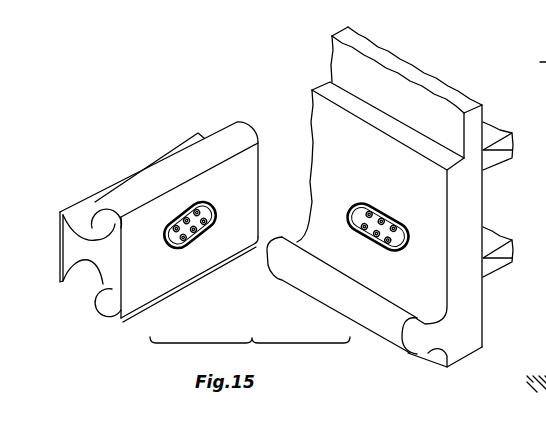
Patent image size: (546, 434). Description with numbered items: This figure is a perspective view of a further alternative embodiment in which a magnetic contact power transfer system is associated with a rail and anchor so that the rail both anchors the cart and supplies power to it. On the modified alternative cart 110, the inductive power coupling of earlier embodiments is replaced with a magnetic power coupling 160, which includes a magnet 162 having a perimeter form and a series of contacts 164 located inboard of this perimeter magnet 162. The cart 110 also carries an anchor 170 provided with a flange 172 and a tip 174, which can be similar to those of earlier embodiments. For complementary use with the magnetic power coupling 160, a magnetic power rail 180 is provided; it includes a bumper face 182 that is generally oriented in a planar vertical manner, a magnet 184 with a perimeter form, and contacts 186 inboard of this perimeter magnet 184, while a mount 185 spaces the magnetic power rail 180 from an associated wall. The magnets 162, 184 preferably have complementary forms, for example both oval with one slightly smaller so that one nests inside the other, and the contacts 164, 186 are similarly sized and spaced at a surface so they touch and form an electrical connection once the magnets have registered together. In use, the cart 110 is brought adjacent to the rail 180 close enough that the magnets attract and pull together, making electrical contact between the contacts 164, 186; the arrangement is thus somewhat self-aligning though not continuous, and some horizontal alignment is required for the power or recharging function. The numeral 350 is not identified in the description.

The alternative cart 110 is at (392, 212).
The magnetic power coupling 160 is at (355, 224).
The magnet 162 is at (383, 224).
The contacts 164 is at (407, 229).
The anchor 170 is at (340, 295).
The flange 172 is at (421, 357).
The tip 174 is at (384, 306).
The magnetic power rail 180 is at (160, 203).
The bumper face 182 is at (228, 176).
The magnet 184 is at (184, 188).
The mount 185 is at (98, 256).
The contacts 186 is at (181, 213).
The adjacent member 350 is at (541, 60).